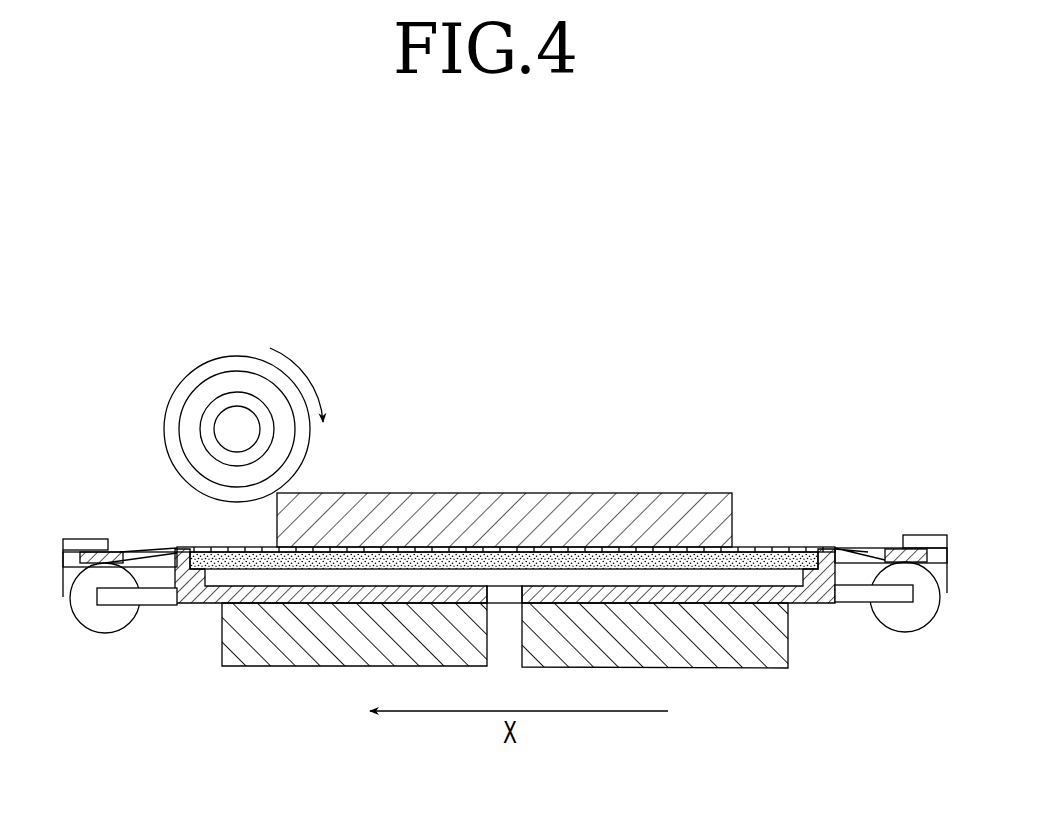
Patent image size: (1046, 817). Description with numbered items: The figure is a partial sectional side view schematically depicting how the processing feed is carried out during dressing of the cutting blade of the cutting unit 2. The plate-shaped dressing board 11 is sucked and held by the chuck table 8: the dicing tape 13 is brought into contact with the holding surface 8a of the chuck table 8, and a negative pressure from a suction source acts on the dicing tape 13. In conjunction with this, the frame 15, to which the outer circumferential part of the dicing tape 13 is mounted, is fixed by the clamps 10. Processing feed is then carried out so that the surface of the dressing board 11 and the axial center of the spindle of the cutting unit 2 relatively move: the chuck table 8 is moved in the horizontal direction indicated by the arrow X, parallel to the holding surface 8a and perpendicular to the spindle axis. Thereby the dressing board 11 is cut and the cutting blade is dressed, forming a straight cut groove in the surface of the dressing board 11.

The cutting unit 2 is at (209, 354).
The chuck table 8 is at (222, 682).
The holding surface 8a is at (200, 550).
The clamps 10 is at (84, 545).
The dressing board 11 is at (621, 492).
The dicing tape 13 is at (805, 547).
The frame 15 is at (894, 548).